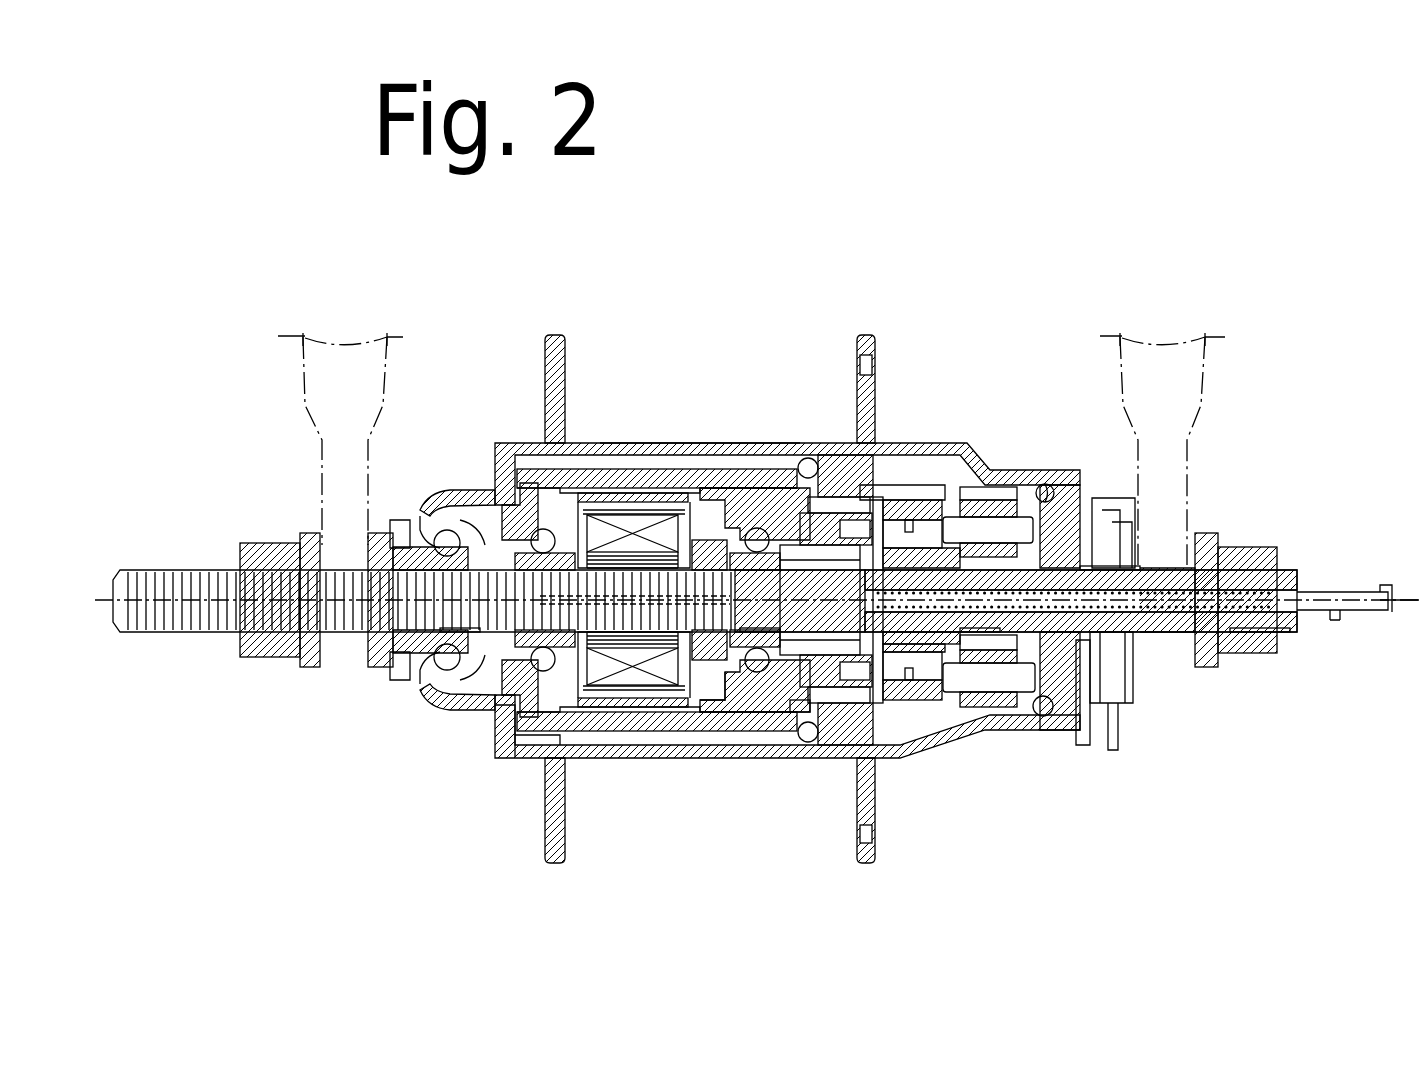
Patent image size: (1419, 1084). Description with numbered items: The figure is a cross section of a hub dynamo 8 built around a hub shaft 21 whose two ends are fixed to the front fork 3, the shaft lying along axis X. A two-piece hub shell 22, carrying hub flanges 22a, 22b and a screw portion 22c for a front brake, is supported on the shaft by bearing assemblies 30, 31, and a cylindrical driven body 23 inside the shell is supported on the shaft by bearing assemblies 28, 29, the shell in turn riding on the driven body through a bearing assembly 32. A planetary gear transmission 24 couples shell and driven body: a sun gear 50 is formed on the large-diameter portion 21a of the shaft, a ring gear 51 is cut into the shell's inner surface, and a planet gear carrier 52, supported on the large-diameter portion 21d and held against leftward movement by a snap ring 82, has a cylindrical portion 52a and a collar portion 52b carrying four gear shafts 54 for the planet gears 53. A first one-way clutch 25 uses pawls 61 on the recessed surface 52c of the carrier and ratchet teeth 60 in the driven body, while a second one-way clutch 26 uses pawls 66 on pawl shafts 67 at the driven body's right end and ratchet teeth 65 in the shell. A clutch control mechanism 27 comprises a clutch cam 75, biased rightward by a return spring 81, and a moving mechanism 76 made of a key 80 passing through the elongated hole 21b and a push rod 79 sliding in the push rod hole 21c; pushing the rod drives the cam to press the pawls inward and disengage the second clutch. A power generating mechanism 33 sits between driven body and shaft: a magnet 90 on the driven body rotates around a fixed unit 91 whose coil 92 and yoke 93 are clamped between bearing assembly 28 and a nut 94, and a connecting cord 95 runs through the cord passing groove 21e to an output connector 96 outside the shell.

The front fork 3 is at (378, 405).
The hub dynamo 8 is at (745, 325).
The hub shaft 21 is at (1290, 590).
The large-diameter portion 21a is at (1082, 564).
The elongated hole 21b is at (765, 710).
The push rod hole 21c is at (1227, 650).
The large-diameter portion 21d is at (975, 740).
The cord passing groove 21e is at (470, 630).
The hub shell 22 is at (985, 462).
The hub flange 22a is at (558, 335).
The hub flange 22b is at (857, 345).
The screw portion 22c is at (470, 490).
The driven body 23 is at (635, 483).
The planetary gear transmission 24 is at (995, 735).
The first one-way clutch 25 is at (910, 530).
The second one-way clutch 26 is at (868, 497).
The clutch control mechanism 27 is at (815, 690).
The bearing assembly 28 is at (492, 685).
The bearing assembly 29 is at (727, 700).
The bearing assembly 30 is at (447, 668).
The bearing assembly 31 is at (1060, 470).
The bearing assembly 32 is at (810, 460).
The power generating mechanism 33 is at (585, 745).
The sun gear 50 is at (1043, 486).
The ring gear 51 is at (975, 495).
The planet gear carrier 52 is at (960, 690).
The cylindrical portion 52a is at (965, 705).
The collar portion 52b is at (970, 690).
The recessed outer peripheral surface 52c is at (893, 700).
The planet gears 53 is at (1015, 730).
The gear shafts 54 is at (1078, 725).
The ratchet teeth 60 is at (900, 515).
The pawls 61 is at (920, 498).
The ratchet teeth 65 is at (872, 480).
The pawls 66 is at (840, 700).
The pawl shafts 67 is at (835, 480).
The clutch cam 75 is at (758, 528).
The moving mechanism 76 is at (1155, 640).
The push rod 79 is at (1320, 590).
The key 80 is at (670, 688).
The return spring 81 is at (718, 540).
The snap ring 82 is at (858, 830).
The magnet 90 is at (606, 492).
The fixed unit 91 is at (585, 703).
The coil 92 is at (537, 743).
The yoke 93 is at (497, 750).
The nut 94 is at (633, 667).
The connecting cord 95 is at (1115, 545).
The output connector 96 is at (1120, 498).
The axis X is at (1385, 620).